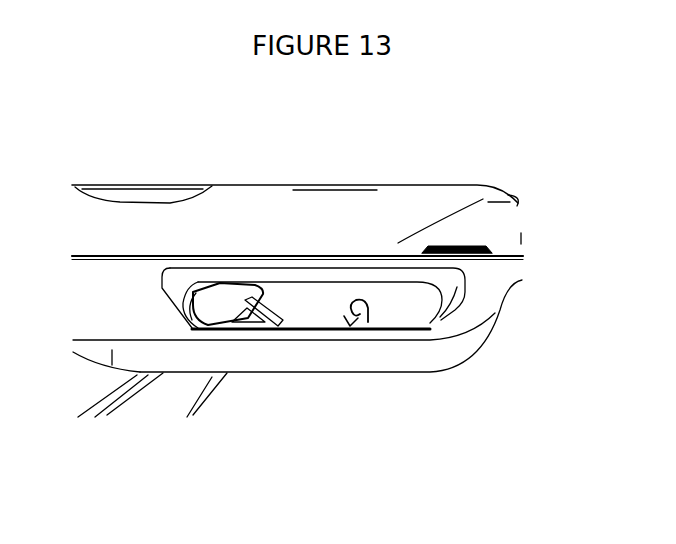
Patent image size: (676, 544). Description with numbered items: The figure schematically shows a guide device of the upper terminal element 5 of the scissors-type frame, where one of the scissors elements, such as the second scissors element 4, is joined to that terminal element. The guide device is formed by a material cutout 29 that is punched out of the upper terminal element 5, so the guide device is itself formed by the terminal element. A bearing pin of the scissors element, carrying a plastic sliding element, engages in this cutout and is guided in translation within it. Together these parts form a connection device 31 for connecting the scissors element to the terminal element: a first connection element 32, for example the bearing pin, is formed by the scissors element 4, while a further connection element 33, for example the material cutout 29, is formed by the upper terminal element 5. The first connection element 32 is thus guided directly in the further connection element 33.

The second scissors element 4 is at (140, 407).
The upper terminal element 5 is at (415, 198).
The material cutout 29 is at (310, 305).
The connection device 31 is at (363, 450).
The first connection element 32 is at (225, 303).
The further connection element 33 is at (368, 322).